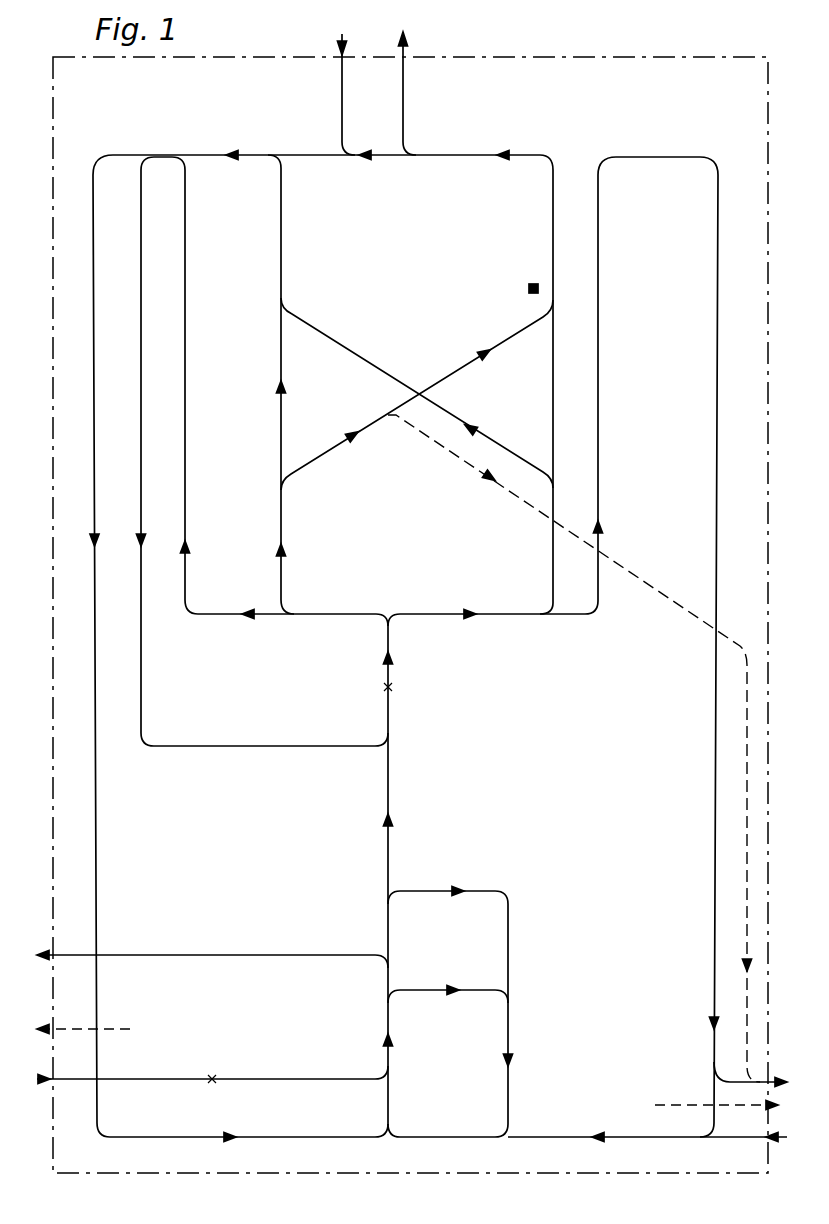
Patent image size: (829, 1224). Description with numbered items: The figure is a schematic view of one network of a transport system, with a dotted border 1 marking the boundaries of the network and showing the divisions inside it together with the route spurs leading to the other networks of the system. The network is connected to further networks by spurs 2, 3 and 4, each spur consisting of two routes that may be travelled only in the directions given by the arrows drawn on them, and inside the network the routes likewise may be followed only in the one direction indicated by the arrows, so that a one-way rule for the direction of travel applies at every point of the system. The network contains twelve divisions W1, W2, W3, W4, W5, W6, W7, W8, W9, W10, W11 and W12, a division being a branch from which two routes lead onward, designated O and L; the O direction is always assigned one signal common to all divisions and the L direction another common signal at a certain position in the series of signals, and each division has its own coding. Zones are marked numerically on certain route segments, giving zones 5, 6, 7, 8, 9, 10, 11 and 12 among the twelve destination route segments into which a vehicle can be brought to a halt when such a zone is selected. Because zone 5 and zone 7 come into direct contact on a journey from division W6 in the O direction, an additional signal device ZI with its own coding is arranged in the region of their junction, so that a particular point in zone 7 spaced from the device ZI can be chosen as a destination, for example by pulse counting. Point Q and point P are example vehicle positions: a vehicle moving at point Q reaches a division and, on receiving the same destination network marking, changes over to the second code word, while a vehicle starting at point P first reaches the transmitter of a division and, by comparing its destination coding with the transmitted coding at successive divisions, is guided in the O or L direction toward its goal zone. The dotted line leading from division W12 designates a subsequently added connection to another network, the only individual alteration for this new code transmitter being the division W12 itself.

The dotted border 1 is at (670, 59).
The spur 2 is at (212, 1043).
The spur 3 is at (403, 875).
The spur 4 is at (586, 649).
The zone 5 is at (541, 403).
The zone 6 is at (423, 399).
The zone 7 is at (544, 152).
The zone 8 is at (513, 691).
The zone 9 is at (280, 384).
The zone 10 is at (271, 401).
The zone 11 is at (239, 648).
The zone 12 is at (263, 451).
The division W1 is at (448, 979).
The division W2 is at (212, 965).
The division W3 is at (444, 1001).
The division W4 is at (429, 611).
The division W5 is at (533, 611).
The division W6 is at (540, 465).
The division W7 is at (417, 153).
The division W8 is at (310, 628).
The division W9 is at (295, 466).
The division W10 is at (197, 156).
The division W11 is at (731, 1065).
The division W12 is at (566, 739).
The additional signal device ZI is at (530, 276).
The point P is at (403, 688).
The point Q is at (225, 1069).